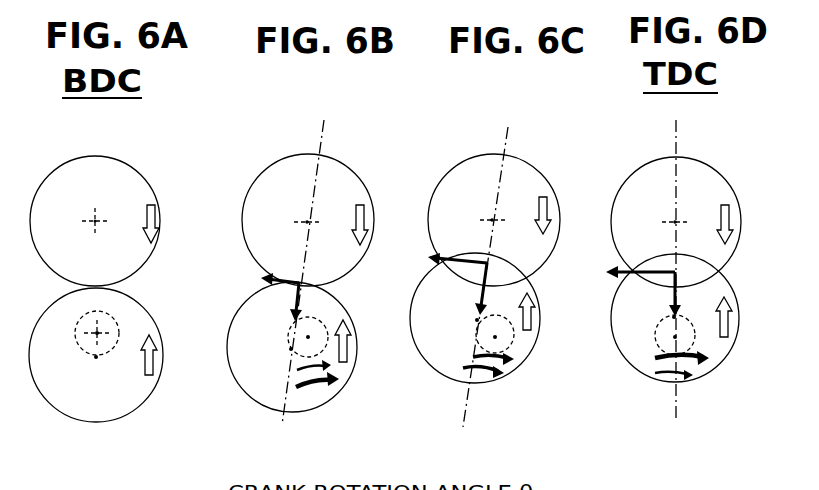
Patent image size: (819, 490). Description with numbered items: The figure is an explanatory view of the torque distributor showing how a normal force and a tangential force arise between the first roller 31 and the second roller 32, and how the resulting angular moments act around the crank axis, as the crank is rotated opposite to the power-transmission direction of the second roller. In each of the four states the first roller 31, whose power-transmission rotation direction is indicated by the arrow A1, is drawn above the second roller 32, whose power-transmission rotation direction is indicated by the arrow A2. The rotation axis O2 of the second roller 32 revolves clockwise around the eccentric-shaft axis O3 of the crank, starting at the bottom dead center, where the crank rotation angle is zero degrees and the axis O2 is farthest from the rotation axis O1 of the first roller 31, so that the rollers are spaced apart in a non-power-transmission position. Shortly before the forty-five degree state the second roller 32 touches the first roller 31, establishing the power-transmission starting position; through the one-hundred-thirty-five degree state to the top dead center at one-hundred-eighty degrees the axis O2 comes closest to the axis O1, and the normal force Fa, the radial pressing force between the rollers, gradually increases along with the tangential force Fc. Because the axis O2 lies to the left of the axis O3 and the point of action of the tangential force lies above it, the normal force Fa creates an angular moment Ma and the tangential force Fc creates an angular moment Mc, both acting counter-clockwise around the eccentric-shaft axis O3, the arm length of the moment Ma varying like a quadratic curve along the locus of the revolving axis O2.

In FIG. 6A, the first roller 31 is at (148, 173).
In FIG. 6B, the first roller 31 is at (353, 168).
In FIG. 6C, the first roller 31 is at (543, 170).
In FIG. 6D, the first roller 31 is at (718, 173).
In FIG. 6A, the second roller 32 is at (133, 411).
In FIG. 6B, the second roller 32 is at (355, 383).
In FIG. 6C, the second roller 32 is at (532, 350).
In FIG. 6D, the second roller 32 is at (708, 375).
In FIG. 6A, the rotation direction of power transmission of the first roller A1 is at (160, 201).
In FIG. 6B, the rotation direction of power transmission of the first roller A1 is at (370, 198).
In FIG. 6C, the rotation direction of power transmission of the first roller A1 is at (555, 205).
In FIG. 6D, the rotation direction of power transmission of the first roller A1 is at (733, 220).
In FIG. 6A, the rotation direction of power transmission of the second roller A2 is at (159, 369).
In FIG. 6B, the rotation direction of power transmission of the second roller A2 is at (350, 352).
In FIG. 6C, the rotation direction of power transmission of the second roller A2 is at (537, 308).
In FIG. 6D, the rotation direction of power transmission of the second roller A2 is at (730, 318).
In FIG. 6A, the rotation axis of the first roller O1 is at (95, 220).
In FIG. 6A, the rotation axis of the second roller O2 is at (97, 359).
In FIG. 6B, the rotation axis of the second roller O2 is at (290, 350).
In FIG. 6C, the rotation axis of the second roller O2 is at (477, 320).
In FIG. 6D, the rotation axis of the second roller O2 is at (672, 316).
In FIG. 6A, the eccentric-shaft axis O3 is at (99, 332).
In FIG. 6B, the eccentric-shaft axis O3 is at (310, 336).
In FIG. 6C, the eccentric-shaft axis O3 is at (497, 337).
In FIG. 6D, the eccentric-shaft axis O3 is at (678, 340).
In FIG. 6B, the tangential force Fc is at (270, 277).
In FIG. 6C, the tangential force Fc is at (438, 260).
In FIG. 6D, the tangential force Fc is at (652, 267).
In FIG. 6B, the normal force Fa is at (293, 314).
In FIG. 6C, the normal force Fa is at (522, 280).
In FIG. 6D, the normal force Fa is at (682, 293).
In FIG. 6B, the angular moment created by tangential force Mc is at (290, 351).
In FIG. 6C, the angular moment created by tangential force Mc is at (473, 358).
In FIG. 6D, the angular moment created by tangential force Mc is at (655, 363).
In FIG. 6B, the angular moment created by normal force Ma is at (305, 392).
In FIG. 6C, the angular moment created by normal force Ma is at (480, 376).
In FIG. 6D, the angular moment created by normal force Ma is at (670, 378).